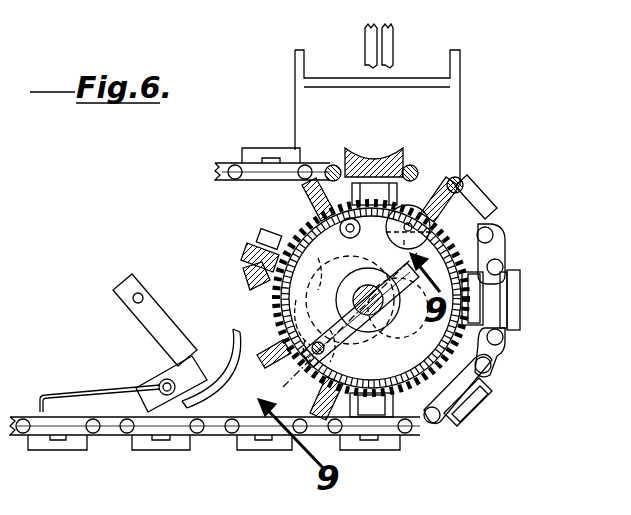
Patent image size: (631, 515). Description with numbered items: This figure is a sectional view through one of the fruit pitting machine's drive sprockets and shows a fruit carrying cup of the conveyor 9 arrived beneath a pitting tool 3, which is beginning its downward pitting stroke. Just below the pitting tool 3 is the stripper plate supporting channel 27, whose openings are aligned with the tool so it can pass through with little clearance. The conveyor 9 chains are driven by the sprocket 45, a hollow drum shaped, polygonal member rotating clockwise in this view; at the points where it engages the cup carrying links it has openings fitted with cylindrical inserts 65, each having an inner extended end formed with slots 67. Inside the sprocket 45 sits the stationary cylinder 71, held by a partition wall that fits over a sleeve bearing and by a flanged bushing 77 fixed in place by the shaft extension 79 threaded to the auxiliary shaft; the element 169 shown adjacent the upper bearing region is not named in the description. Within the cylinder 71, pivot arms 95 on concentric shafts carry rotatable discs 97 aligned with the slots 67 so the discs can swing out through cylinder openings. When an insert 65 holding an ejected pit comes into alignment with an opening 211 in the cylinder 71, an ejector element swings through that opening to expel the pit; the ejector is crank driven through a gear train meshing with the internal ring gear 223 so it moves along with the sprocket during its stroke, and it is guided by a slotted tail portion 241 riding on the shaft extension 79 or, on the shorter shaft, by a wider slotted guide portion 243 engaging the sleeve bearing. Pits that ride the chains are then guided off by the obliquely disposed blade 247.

The pitting tool 3 is at (392, 42).
The stripper plate supporting channel 27 is at (458, 82).
The bearing block 169 is at (374, 194).
The cylindrical insert 65 is at (312, 205).
The slot 67 is at (275, 236).
The sprocket 45 is at (247, 275).
The stationary cylinder 71 is at (288, 275).
The flanged bushing 77 is at (399, 294).
The shaft extension 79 is at (395, 322).
The slotted tail portion 241 is at (386, 343).
The opening 211 is at (302, 316).
The slotted guide portion 243 is at (350, 258).
The pivot arm 95 is at (352, 240).
The rotatable disc 97 is at (408, 250).
The internal ring gear 223 is at (495, 345).
The conveyor 9 is at (214, 461).
The blade 247 is at (62, 384).